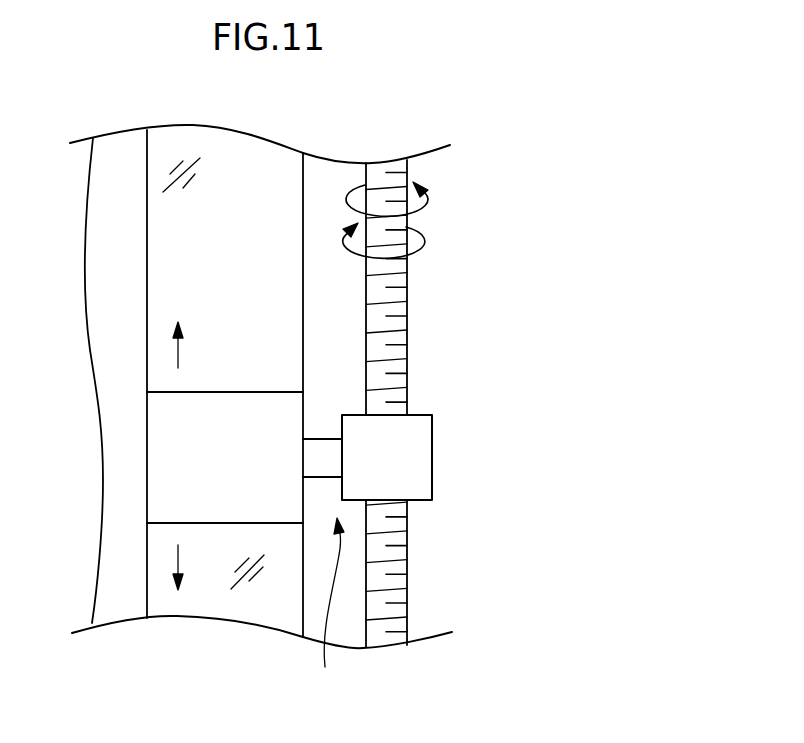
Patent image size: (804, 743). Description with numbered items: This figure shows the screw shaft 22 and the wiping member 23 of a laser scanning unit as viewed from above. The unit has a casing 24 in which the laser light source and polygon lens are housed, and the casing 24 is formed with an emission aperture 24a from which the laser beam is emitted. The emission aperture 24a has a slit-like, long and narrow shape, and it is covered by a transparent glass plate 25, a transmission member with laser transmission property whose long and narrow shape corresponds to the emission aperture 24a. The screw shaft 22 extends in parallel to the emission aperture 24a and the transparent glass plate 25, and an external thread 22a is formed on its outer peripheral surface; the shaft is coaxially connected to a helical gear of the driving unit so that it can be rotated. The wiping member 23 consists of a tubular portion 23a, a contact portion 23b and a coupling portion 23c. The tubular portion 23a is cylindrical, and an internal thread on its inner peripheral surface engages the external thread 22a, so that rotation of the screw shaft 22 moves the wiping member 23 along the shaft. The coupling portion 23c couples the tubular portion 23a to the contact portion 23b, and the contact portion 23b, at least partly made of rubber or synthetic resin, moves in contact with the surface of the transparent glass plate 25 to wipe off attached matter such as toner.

The screw shaft 22 is at (400, 350).
The external thread 22a is at (407, 288).
The wiping member 23 is at (328, 611).
The tubular portion 23a is at (410, 458).
The contact portion 23b is at (232, 420).
The coupling portion 23c is at (325, 450).
The casing 24 is at (117, 433).
The emission aperture 24a is at (302, 587).
The transparent glass plate 25 is at (232, 170).